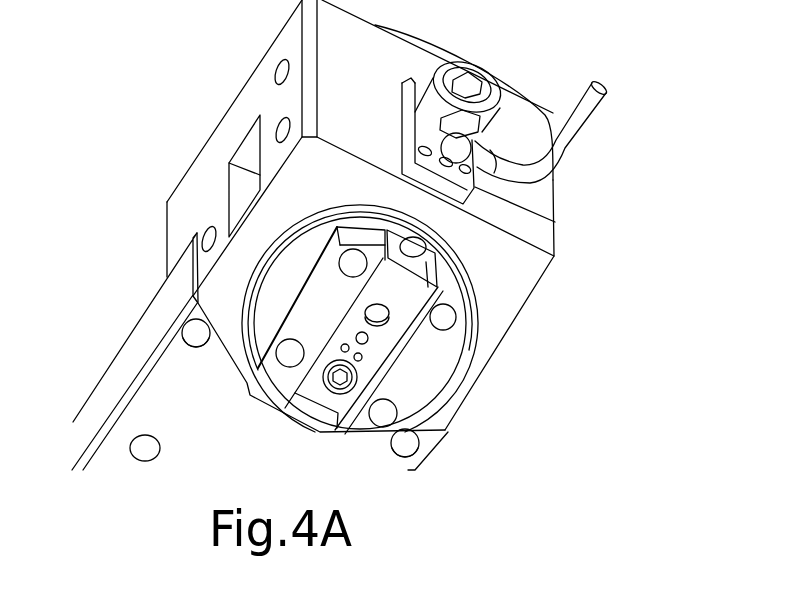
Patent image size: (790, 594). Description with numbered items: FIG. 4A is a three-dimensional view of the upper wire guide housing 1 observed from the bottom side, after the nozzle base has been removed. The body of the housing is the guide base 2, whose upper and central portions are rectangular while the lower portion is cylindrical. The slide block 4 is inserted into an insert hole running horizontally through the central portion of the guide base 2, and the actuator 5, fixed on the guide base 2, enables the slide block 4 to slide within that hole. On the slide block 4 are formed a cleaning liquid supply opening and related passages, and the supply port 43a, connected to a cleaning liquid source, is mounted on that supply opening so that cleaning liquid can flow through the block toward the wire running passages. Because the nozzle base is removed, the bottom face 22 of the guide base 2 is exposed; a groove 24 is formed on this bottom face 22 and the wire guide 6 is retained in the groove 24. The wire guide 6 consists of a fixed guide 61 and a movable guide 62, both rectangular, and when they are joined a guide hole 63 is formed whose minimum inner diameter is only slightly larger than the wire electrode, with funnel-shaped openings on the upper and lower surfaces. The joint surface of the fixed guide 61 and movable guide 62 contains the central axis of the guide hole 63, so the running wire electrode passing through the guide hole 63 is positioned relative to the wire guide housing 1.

The wire guide housing 1 is at (82, 74).
The guide base 2 is at (256, 82).
The slide block 4 is at (400, 80).
The actuator 5 is at (128, 360).
The wire guide 6 is at (529, 382).
The bottom face 22 is at (402, 222).
The groove 24 is at (440, 241).
The supply port 43a is at (556, 220).
The fixed guide 61 is at (363, 368).
The movable guide 62 is at (397, 320).
The guide hole 63 is at (360, 336).